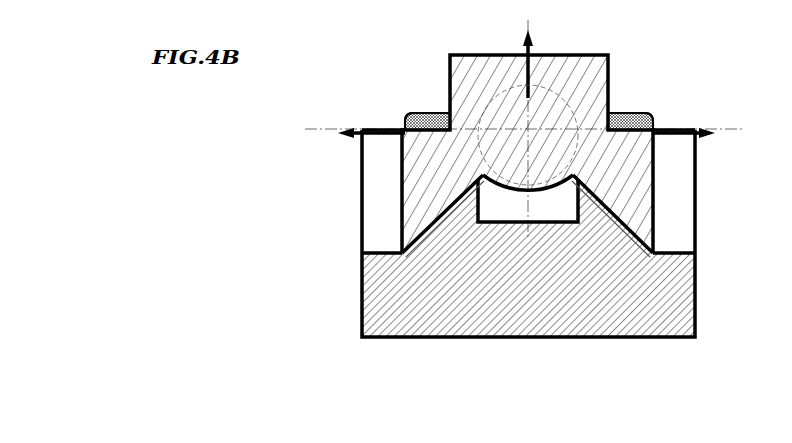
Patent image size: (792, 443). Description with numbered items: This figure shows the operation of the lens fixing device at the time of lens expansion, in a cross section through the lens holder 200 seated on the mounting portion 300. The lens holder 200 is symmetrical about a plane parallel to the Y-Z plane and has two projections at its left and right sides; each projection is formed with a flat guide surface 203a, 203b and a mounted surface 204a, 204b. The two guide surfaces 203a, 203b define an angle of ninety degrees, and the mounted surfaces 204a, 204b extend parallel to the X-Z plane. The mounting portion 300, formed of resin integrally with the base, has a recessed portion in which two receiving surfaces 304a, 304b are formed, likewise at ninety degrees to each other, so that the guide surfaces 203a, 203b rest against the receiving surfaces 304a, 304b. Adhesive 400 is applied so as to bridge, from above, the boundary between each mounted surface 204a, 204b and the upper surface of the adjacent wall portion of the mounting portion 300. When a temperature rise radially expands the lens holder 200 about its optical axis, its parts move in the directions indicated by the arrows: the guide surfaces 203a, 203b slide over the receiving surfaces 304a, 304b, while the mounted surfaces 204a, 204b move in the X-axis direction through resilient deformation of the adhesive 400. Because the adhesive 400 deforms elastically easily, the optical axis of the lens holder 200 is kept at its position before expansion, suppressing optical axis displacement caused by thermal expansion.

The lens holder 200 is at (483, 67).
The guide surface 203a is at (442, 203).
The guide surface 203b is at (613, 197).
The mounted surface 204a is at (410, 117).
The mounted surface 204b is at (650, 115).
The mounting portion 300 is at (676, 338).
The receiving surface 304a is at (410, 240).
The receiving surface 304b is at (640, 240).
The adhesive 400 is at (422, 113).